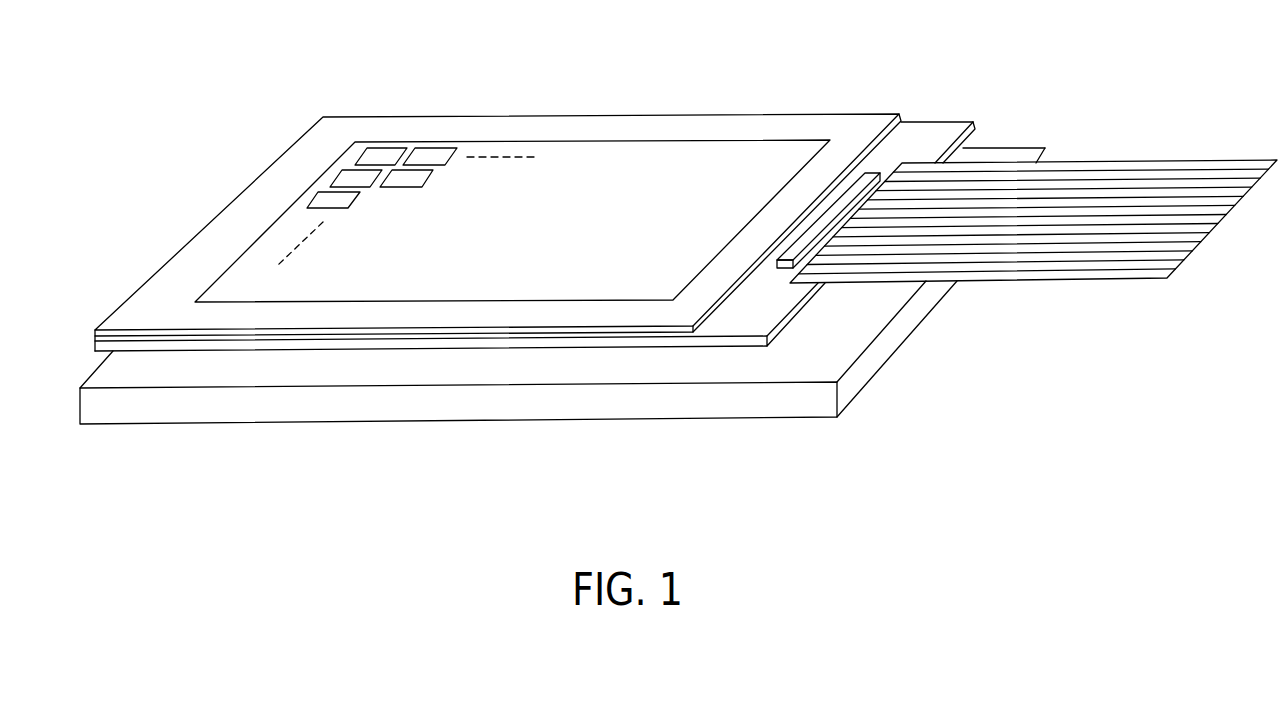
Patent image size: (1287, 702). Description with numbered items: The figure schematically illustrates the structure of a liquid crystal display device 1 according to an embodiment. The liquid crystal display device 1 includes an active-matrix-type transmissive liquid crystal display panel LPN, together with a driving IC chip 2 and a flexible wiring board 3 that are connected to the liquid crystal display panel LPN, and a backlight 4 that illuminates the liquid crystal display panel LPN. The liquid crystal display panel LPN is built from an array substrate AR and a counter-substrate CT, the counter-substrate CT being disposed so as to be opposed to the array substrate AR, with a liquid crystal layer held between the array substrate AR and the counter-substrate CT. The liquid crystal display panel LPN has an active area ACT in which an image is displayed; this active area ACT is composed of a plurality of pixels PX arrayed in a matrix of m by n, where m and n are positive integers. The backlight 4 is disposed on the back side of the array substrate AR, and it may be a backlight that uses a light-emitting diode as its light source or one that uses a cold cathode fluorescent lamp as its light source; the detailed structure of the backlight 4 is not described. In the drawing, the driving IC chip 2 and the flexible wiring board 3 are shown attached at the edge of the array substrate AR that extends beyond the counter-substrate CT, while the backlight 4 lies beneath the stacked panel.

The liquid crystal display device 1 is at (998, 77).
The driving IC chip 2 is at (860, 183).
The flexible wiring board 3 is at (1203, 160).
The backlight 4 is at (103, 412).
The pixels PX is at (389, 143).
The counter-substrate CT is at (540, 333).
The array substrate AR is at (608, 342).
The liquid crystal display panel LPN is at (735, 358).
The active area ACT is at (430, 308).